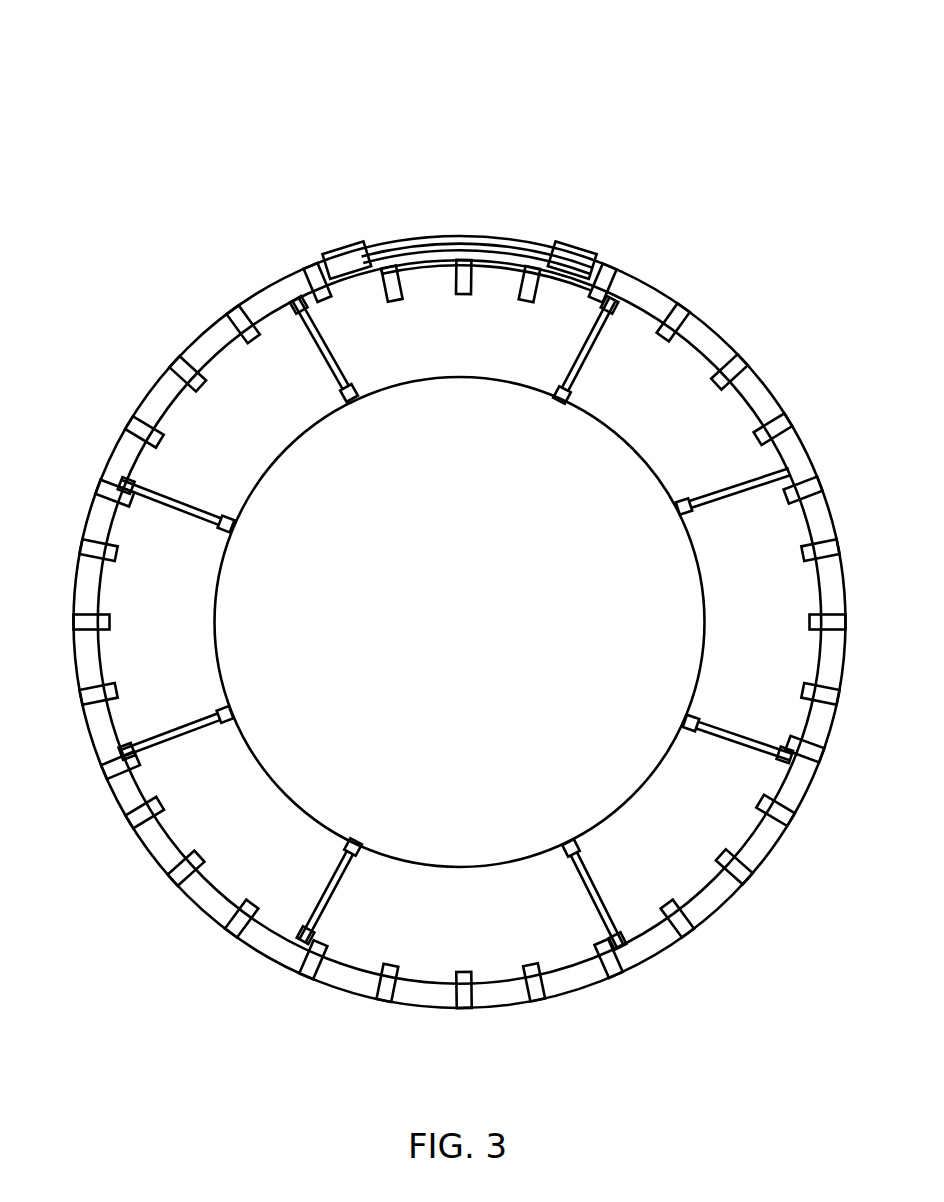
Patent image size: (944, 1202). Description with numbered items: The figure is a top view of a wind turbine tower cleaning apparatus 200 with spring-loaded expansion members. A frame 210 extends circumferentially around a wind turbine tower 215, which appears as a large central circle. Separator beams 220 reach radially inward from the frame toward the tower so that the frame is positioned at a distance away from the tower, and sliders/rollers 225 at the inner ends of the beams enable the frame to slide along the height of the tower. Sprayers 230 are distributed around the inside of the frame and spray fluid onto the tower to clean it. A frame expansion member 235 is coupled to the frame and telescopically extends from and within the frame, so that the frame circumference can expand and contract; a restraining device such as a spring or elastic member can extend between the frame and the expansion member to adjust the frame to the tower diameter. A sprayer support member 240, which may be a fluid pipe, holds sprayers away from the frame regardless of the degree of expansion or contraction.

The wind turbine tower cleaning apparatus 200 is at (223, 128).
The frame 210 is at (273, 284).
The wind turbine tower 215 is at (481, 636).
The separator beam 220 is at (586, 353).
The slider/roller 225 is at (348, 394).
The sprayer 230 is at (176, 353).
The frame expansion member 235 is at (393, 245).
The sprayer support member 240 is at (489, 257).